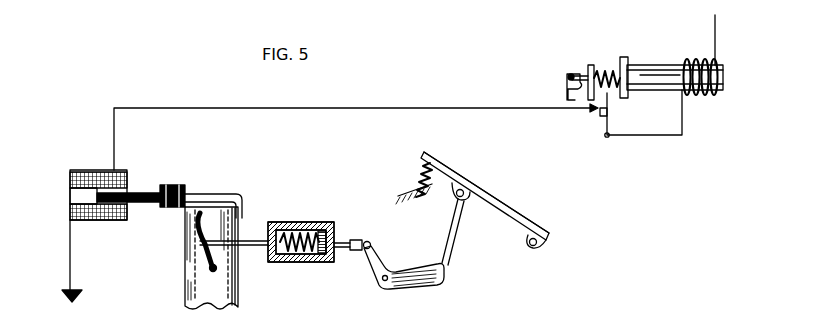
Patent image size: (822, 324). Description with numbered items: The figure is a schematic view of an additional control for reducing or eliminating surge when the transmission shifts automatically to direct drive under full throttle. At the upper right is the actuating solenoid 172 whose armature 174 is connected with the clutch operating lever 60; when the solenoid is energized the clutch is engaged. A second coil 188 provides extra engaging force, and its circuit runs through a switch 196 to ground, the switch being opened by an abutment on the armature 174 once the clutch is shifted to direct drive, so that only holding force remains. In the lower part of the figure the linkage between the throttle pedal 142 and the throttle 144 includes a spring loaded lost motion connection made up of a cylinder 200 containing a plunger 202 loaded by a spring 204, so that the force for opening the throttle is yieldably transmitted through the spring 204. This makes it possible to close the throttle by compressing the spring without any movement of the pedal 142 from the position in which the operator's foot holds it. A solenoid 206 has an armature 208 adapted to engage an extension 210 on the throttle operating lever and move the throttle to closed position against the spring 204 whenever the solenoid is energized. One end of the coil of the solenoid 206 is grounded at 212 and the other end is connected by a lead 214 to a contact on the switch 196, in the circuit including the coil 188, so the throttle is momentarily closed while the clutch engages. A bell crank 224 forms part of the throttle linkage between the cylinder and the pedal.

The clutch operating lever 60 is at (567, 86).
The throttle pedal 142 is at (510, 204).
The throttle 144 is at (225, 302).
The actuating solenoid 172 is at (666, 63).
The armature 174 is at (580, 72).
The second coil 188 is at (708, 94).
The switch 196 is at (612, 114).
The cylinder 200 is at (289, 262).
The plunger 202 is at (292, 222).
The spring 204 is at (322, 230).
The solenoid 206 is at (124, 221).
The armature 208 is at (243, 178).
The extension 210 is at (190, 238).
The ground 212 is at (80, 300).
The lead 214 is at (410, 108).
The bell crank 224 is at (454, 323).